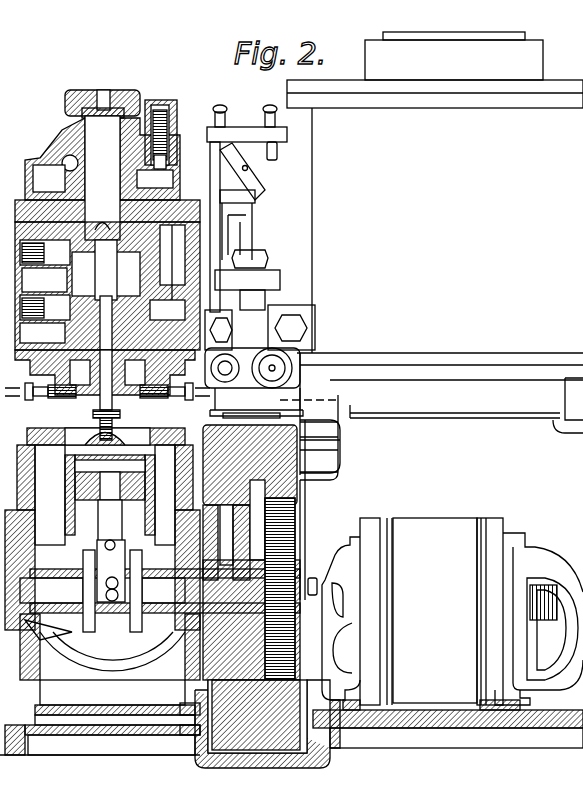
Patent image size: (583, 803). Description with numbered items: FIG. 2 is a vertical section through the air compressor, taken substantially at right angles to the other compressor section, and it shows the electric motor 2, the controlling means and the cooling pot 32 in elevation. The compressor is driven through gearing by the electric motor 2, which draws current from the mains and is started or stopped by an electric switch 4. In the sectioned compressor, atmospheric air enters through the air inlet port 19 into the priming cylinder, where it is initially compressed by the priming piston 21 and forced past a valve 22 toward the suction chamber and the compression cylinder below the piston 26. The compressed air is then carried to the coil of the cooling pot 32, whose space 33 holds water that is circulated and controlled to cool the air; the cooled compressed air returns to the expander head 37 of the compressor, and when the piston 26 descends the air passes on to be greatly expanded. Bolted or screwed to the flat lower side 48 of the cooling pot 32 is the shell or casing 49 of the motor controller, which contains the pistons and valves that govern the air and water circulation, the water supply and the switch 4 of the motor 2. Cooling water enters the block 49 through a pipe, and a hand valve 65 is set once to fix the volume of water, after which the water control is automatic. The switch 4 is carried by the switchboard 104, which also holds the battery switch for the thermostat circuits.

The electric motor 2 is at (445, 633).
The electric switch 4 is at (248, 180).
The air inlet port 19 is at (48, 142).
The priming piston 21 is at (102, 178).
The valve 22 is at (100, 122).
The piston 26 is at (107, 286).
The cooling pot 32 is at (435, 192).
The space 33 is at (177, 140).
The expander head 37 is at (49, 178).
The flat lower side 48 is at (440, 414).
The shell or casing 49 is at (345, 395).
The hand valve 65 is at (268, 378).
The switchboard 104 is at (240, 127).